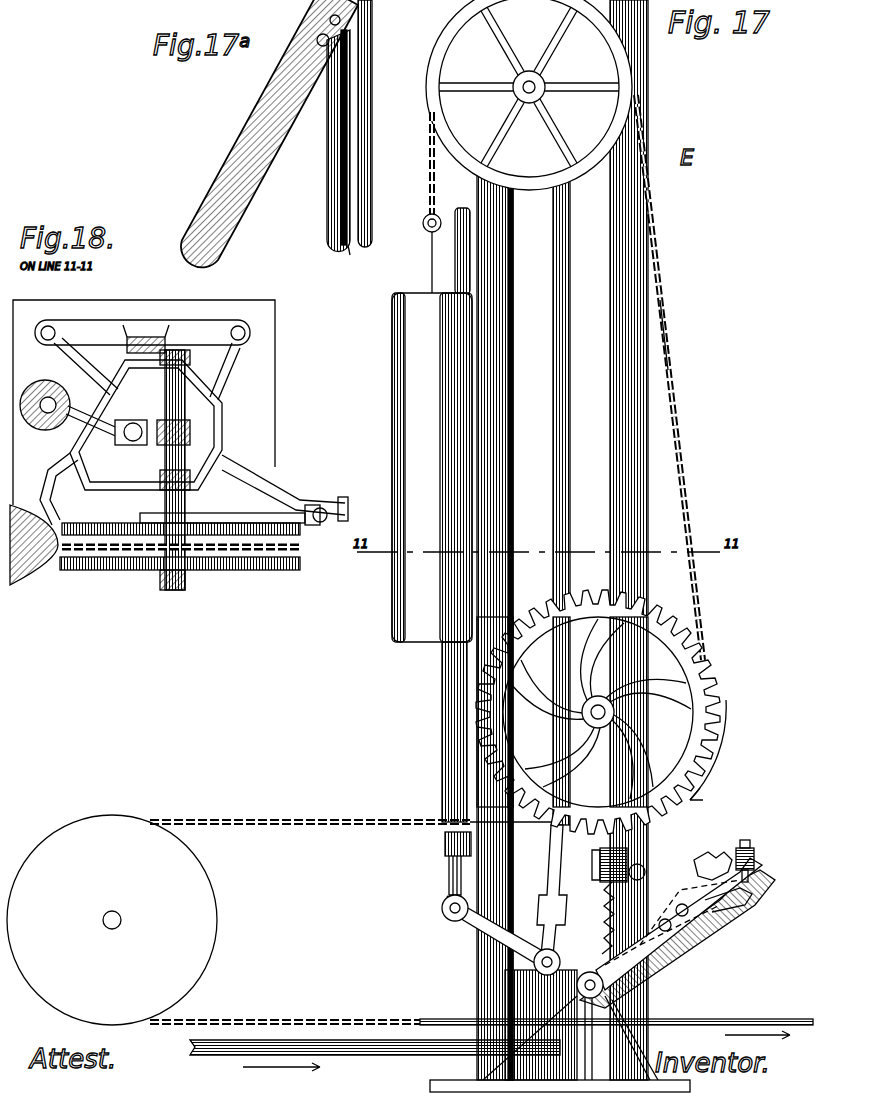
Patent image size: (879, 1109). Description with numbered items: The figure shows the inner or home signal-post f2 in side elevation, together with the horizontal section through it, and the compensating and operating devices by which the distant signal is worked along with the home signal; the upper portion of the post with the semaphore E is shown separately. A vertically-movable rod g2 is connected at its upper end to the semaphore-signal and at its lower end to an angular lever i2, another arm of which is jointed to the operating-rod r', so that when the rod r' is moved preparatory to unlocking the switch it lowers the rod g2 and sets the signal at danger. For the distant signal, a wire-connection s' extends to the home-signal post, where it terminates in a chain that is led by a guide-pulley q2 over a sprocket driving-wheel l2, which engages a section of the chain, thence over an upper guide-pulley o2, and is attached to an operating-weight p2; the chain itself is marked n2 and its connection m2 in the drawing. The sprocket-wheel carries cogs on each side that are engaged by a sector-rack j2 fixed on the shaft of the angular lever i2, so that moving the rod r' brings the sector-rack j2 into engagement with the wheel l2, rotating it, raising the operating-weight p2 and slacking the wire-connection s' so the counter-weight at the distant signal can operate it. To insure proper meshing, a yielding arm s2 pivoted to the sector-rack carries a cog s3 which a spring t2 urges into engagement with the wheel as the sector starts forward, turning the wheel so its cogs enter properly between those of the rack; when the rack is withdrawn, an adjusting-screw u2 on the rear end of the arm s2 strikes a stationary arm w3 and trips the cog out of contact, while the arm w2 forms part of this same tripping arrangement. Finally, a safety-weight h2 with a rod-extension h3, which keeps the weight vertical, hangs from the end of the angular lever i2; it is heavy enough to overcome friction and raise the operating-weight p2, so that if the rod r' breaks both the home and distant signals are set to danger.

In FIG. 17A, the bar E is at (269, 133).
In FIG. 17, the signal-post f2 is at (562, 540).
In FIG. 17A, the signal-post f2 is at (349, 126).
In FIG. 18, the signal-post f2 is at (78, 480).
In FIG. 17, the vertically-movable rod g2 is at (556, 386).
In FIG. 17A, the vertically-movable rod g2 is at (337, 255).
In FIG. 18, the vertically-movable rod g2 is at (136, 424).
In FIG. 17, the guide-pulley o2 is at (529, 95).
In FIG. 17, the chain n2 is at (426, 558).
In FIG. 17, the chain connection m2 is at (679, 352).
In FIG. 17, the safety-weight h2 is at (457, 515).
In FIG. 18, the safety-weight h2 is at (45, 397).
In FIG. 17, the rod-extension h3 is at (447, 850).
In FIG. 18, the rod-extension h3 is at (52, 398).
In FIG. 17, the operating-weight p2 is at (432, 467).
In FIG. 18, the operating-weight p2 is at (34, 553).
In FIG. 17, the sprocket driving-wheel l2 is at (601, 702).
In FIG. 18, the sprocket driving-wheel l2 is at (105, 577).
In FIG. 17, the guide-pulley q2 is at (112, 920).
In FIG. 17, the wire-connection s' is at (616, 1016).
In FIG. 17, the operating-rod r' is at (375, 1063).
In FIG. 17, the angular lever i2 is at (501, 935).
In FIG. 18, the angular lever i2 is at (94, 431).
In FIG. 17, the sector-rack j2 is at (629, 969).
In FIG. 17, the cog s3 is at (601, 856).
In FIG. 17, the spring t2 is at (597, 918).
In FIG. 17, the yielding arm s2 is at (596, 866).
In FIG. 18, the yielding arm s2 is at (222, 512).
In FIG. 17, the adjusting-screw u2 is at (755, 852).
In FIG. 18, the adjusting-screw u2 is at (317, 524).
In FIG. 17, the stationary arm w3 is at (736, 905).
In FIG. 18, the arm w2 is at (322, 508).